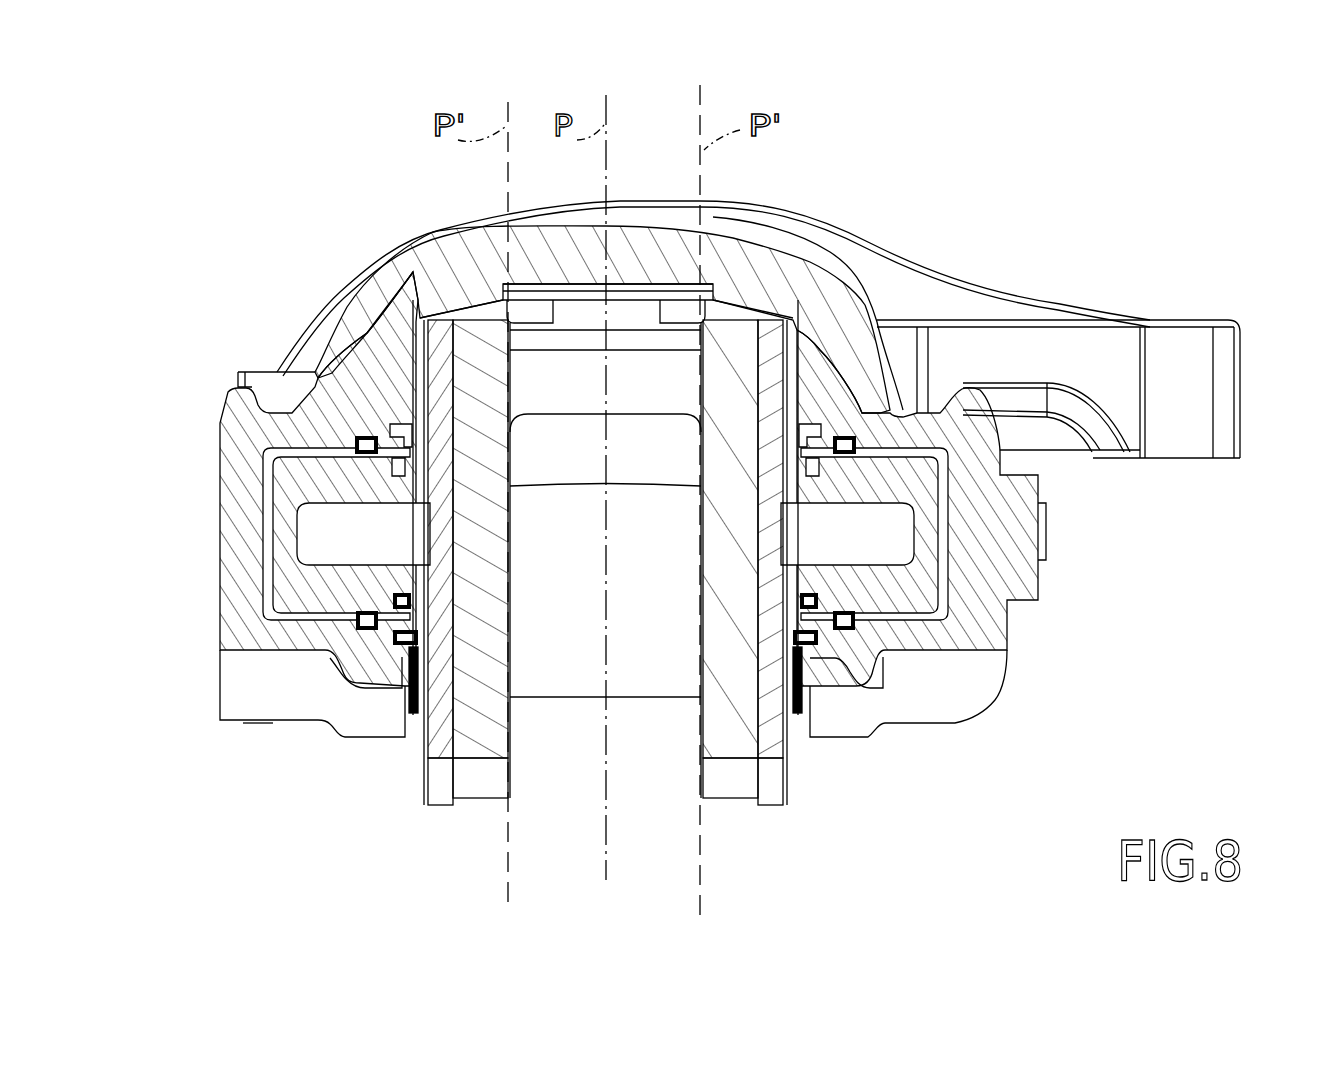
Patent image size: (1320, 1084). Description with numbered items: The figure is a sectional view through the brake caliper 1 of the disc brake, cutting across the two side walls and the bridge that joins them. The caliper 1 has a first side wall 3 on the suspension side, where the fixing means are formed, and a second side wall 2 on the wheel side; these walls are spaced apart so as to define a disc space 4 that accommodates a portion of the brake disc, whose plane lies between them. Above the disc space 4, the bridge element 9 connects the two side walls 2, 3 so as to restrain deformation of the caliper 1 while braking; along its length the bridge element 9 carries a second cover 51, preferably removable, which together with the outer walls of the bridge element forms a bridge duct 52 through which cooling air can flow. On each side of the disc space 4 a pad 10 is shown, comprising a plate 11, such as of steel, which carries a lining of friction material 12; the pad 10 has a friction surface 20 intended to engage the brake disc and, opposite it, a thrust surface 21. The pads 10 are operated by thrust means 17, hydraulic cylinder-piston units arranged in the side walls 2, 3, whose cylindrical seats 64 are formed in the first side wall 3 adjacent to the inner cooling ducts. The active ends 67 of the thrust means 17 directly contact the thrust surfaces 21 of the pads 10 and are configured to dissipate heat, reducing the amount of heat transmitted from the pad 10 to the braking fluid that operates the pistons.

The brake caliper 1 is at (1052, 240).
The second side wall 2 is at (240, 627).
The first side wall 3 is at (965, 627).
The disc space 4 is at (620, 748).
The bridge element 9 is at (568, 240).
The pad 10 is at (482, 732).
The plate 11 is at (443, 748).
The lining of friction material 12 is at (493, 743).
The thrust means 17 is at (293, 570).
The friction surface 20 is at (513, 740).
The thrust surface 21 is at (425, 735).
The second cover 51 is at (663, 200).
The bridge duct 52 is at (730, 230).
The cylindrical seat 64 is at (268, 521).
The active end 67 is at (418, 493).